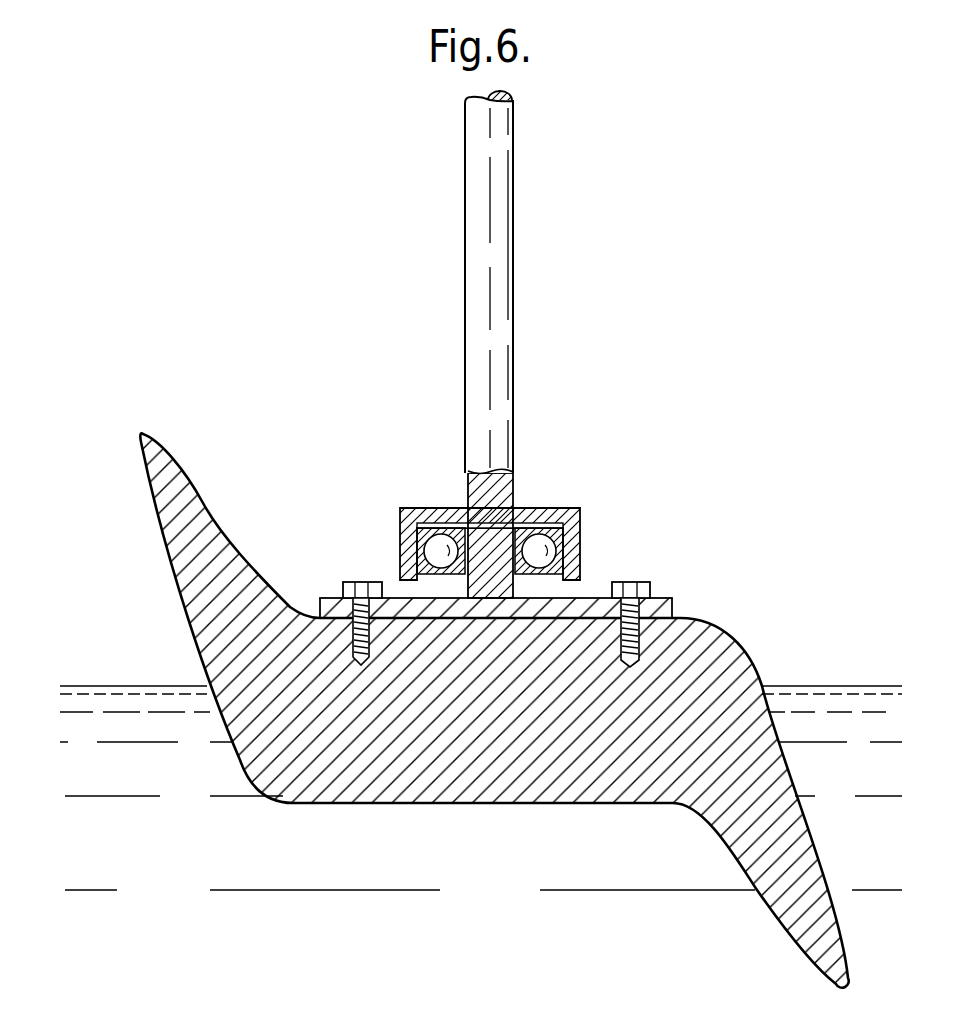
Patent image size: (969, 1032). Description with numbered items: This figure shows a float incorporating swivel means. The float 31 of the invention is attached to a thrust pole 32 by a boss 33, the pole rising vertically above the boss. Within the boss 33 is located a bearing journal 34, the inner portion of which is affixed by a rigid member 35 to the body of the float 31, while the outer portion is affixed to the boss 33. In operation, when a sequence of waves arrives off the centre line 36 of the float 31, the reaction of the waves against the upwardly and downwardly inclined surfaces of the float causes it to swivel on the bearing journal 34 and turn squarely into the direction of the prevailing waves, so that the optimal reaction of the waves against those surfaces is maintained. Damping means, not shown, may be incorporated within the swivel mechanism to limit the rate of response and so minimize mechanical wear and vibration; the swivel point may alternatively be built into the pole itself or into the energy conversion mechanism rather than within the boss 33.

The float 31 is at (193, 499).
The thrust pole 32 is at (505, 243).
The boss 33 is at (581, 522).
The bearing journal 34 is at (540, 551).
The rigid member 35 is at (672, 604).
The centre line 36 is at (208, 686).